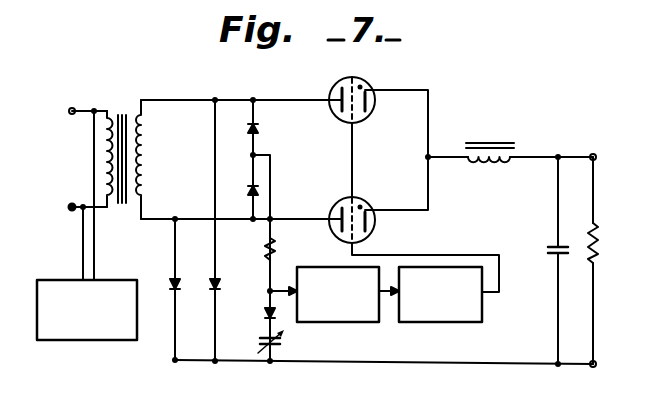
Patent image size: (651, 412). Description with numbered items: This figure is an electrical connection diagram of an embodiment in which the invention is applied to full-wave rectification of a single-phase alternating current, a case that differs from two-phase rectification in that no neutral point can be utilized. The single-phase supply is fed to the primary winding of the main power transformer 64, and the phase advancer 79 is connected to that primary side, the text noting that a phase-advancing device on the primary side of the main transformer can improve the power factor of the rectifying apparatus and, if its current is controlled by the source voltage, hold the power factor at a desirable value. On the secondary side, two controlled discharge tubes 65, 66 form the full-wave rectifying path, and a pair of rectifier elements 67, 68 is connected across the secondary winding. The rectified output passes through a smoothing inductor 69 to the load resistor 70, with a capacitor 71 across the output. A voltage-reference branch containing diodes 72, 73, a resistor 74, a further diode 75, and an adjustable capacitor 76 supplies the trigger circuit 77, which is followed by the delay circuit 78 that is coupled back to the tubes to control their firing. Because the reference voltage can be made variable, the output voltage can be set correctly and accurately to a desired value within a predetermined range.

The transformer 64 is at (122, 104).
The gas discharge tube 65 is at (341, 84).
The gas discharge tube 66 is at (362, 204).
The rectifier diode 67 is at (171, 283).
The rectifier diode 68 is at (211, 283).
The inductor coil 69 is at (486, 141).
The load resistor 70 is at (597, 243).
The capacitor 71 is at (555, 250).
The diode 72 is at (260, 129).
The diode 73 is at (250, 191).
The resistor 74 is at (265, 247).
The diode 75 is at (264, 313).
The variable capacitor 76 is at (258, 339).
The trigger circuit 77 is at (368, 325).
The delay circuit 78 is at (468, 325).
The phase advancer 79 is at (95, 342).